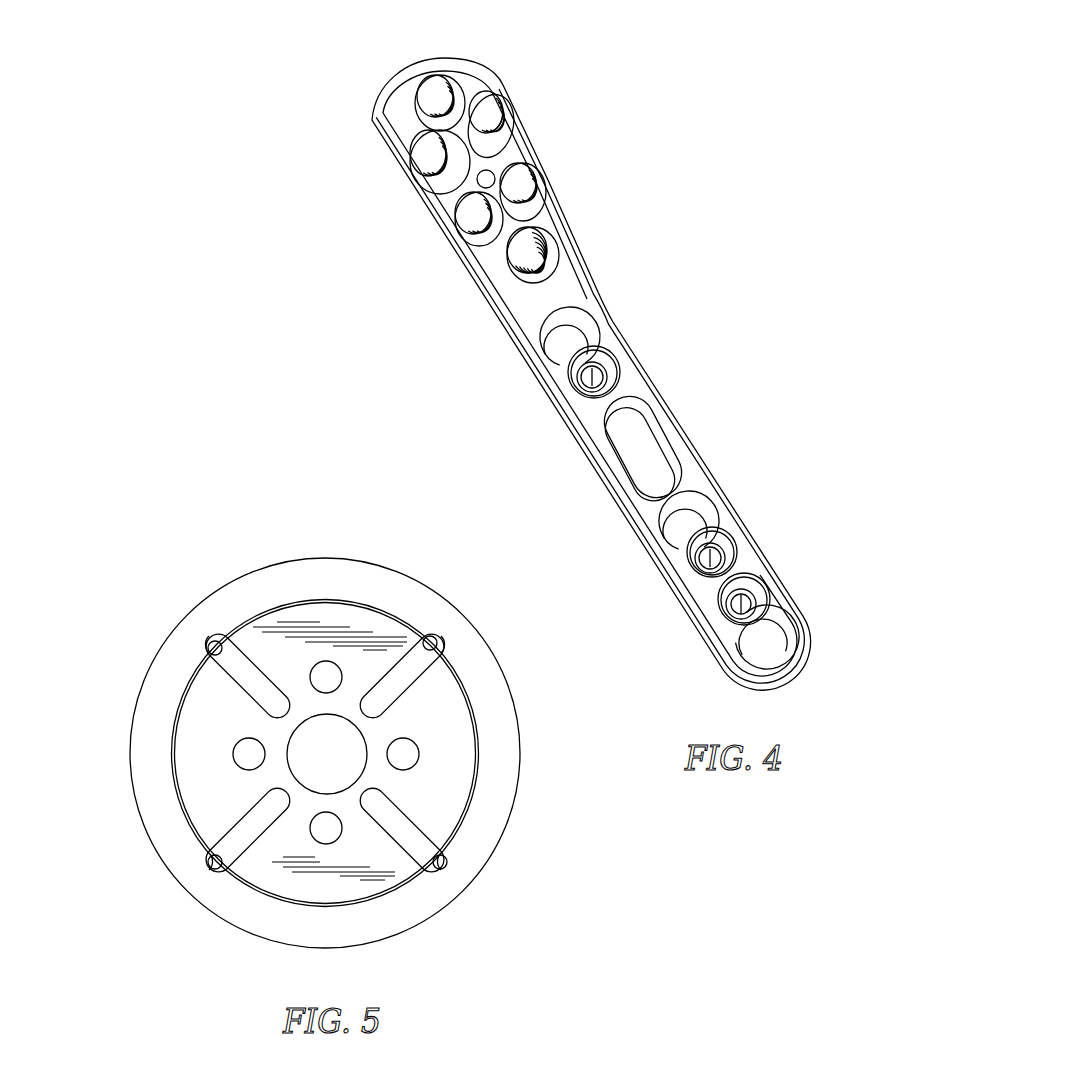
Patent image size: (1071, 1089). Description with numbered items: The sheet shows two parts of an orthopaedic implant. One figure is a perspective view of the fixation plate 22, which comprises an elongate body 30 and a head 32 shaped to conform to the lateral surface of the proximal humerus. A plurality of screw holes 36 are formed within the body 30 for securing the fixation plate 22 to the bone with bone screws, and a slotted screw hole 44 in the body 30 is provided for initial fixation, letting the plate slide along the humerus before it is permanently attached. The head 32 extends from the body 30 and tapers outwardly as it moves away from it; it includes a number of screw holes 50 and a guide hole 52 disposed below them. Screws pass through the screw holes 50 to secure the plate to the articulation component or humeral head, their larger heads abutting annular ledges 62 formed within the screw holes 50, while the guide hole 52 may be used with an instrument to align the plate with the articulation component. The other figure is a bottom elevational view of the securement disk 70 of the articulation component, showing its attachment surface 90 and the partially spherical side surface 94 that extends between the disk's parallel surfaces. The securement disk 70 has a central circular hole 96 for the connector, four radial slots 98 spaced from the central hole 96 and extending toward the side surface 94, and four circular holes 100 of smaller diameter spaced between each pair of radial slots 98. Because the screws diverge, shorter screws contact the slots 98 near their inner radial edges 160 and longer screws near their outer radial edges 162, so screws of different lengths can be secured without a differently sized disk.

In FIG. 4, the fixation plate 22 is at (699, 96).
In FIG. 4, the elongate body 30 is at (622, 498).
In FIG. 4, the head 32 is at (523, 146).
In FIG. 4, the screw holes 36 is at (592, 378).
In FIG. 4, the slotted screw hole 44 is at (643, 460).
In FIG. 4, the screw holes 50 is at (447, 84).
In FIG. 4, the guide hole 52 is at (510, 263).
In FIG. 4, the annular ledges 62 is at (493, 127).
In FIG. 5, the securement disk 70 is at (327, 749).
In FIG. 5, the attachment surface 90 is at (193, 788).
In FIG. 5, the partially spherical side surface 94 is at (142, 773).
In FIG. 5, the central circular hole 96 is at (338, 733).
In FIG. 5, the radial slots 98 is at (223, 645).
In FIG. 5, the circular holes 100 is at (333, 673).
In FIG. 5, the inner radial edges 160 is at (288, 690).
In FIG. 5, the outer radial edges 162 is at (430, 643).